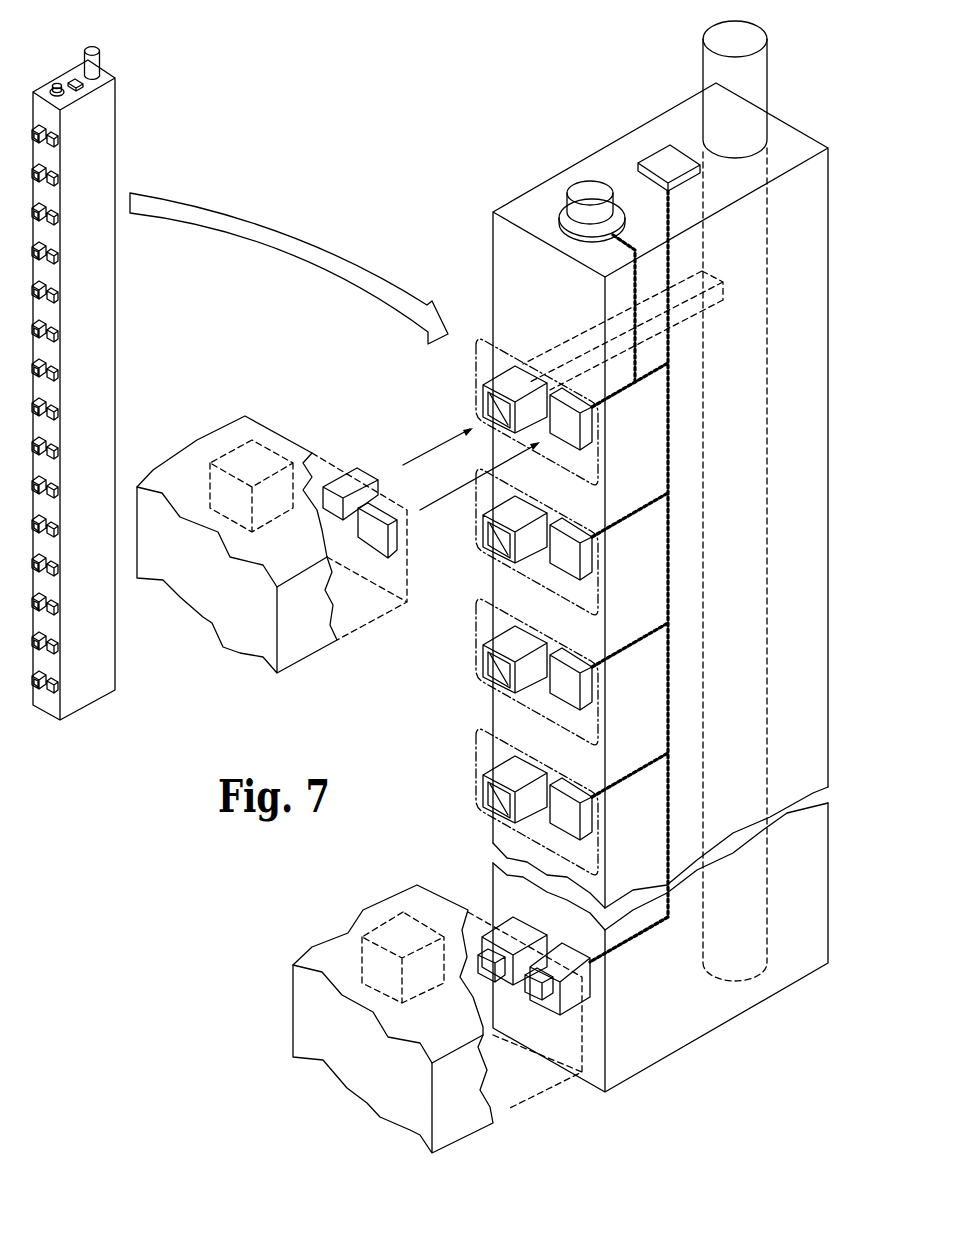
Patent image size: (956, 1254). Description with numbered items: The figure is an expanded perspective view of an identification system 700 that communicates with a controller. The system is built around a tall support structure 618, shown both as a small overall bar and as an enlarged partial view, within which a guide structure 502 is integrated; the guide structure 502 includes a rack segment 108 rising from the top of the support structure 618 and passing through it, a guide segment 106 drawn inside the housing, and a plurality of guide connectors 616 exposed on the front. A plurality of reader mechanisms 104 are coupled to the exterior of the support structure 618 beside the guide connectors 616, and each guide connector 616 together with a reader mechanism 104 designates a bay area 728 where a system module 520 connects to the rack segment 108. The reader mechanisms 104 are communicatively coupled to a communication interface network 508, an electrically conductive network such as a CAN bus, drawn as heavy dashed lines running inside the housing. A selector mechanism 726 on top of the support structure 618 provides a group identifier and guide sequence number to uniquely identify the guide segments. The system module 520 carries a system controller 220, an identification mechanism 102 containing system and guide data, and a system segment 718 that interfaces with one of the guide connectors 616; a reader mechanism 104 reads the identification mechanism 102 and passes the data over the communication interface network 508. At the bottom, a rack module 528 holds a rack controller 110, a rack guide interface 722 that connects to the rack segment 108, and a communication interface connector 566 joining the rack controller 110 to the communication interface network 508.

The identification system 700 is at (128, 116).
The rack segment 108 is at (703, 60).
The selector mechanism 726 is at (582, 182).
The support structure 618 is at (493, 258).
The guide structure 502 is at (578, 323).
The guide segment 106 is at (682, 324).
The bay area 728 is at (523, 362).
The guide connector 616 is at (483, 381).
The reader mechanism 104 is at (588, 431).
The communication interface network 508 is at (672, 533).
The system segment 718 is at (364, 472).
The system controller 220 is at (278, 440).
The identification mechanism 102 is at (393, 535).
The system module 520 is at (205, 623).
The rack controller 110 is at (377, 917).
The rack guide interface 722 is at (480, 982).
The communication interface connector 566 is at (538, 1005).
The rack module 528 is at (360, 1100).